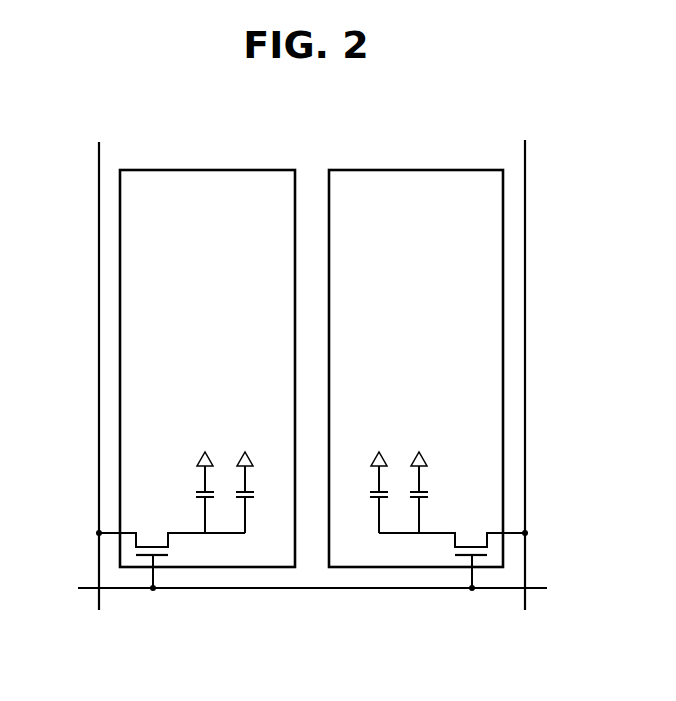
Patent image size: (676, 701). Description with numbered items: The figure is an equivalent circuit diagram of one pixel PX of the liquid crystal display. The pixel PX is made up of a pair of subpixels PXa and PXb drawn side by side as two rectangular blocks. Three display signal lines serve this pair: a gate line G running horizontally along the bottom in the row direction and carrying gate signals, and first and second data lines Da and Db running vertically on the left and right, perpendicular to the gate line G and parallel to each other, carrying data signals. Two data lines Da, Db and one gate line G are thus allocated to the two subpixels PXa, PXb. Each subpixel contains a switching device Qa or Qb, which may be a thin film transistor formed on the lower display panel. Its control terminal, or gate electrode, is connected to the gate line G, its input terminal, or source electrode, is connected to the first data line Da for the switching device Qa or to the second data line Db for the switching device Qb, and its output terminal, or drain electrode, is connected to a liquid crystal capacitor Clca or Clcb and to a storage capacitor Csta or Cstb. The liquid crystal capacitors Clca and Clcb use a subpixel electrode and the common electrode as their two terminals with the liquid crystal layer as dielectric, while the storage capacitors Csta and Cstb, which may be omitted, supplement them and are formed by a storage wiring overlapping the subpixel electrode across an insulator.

The first data line Da is at (99, 365).
The second data line Db is at (525, 365).
The gate line G is at (304, 588).
The pixel PX is at (353, 113).
The first subpixel PXa is at (273, 170).
The second subpixel PXb is at (351, 170).
The switching device Qa is at (163, 567).
The switching device Qb is at (459, 567).
The liquid crystal capacitor Clca is at (188, 492).
The storage capacitor Csta is at (261, 492).
The storage capacitor Cstb is at (362, 492).
The liquid crystal capacitor Clcb is at (434, 492).